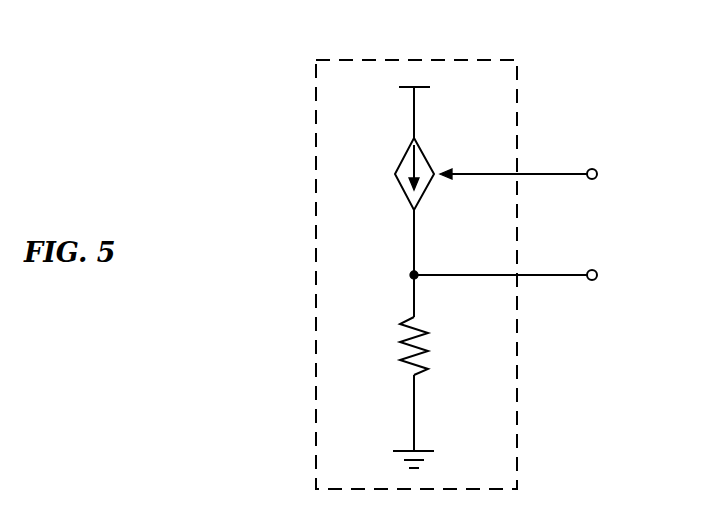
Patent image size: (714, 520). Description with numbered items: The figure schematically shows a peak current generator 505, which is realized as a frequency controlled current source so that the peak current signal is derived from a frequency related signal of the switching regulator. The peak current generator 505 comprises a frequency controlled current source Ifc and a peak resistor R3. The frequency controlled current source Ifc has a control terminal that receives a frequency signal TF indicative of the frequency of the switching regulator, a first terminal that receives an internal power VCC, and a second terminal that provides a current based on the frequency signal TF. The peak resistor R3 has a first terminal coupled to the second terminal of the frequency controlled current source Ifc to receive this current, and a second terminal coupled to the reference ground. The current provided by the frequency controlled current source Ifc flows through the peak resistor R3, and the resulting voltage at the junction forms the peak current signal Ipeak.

The peak current generator 505 is at (413, 60).
The internal power VCC is at (386, 108).
The frequency controlled current source Ifc is at (394, 174).
The frequency signal TF is at (541, 175).
The peak current signal Ipeak is at (538, 276).
The peak resistor R3 is at (393, 346).